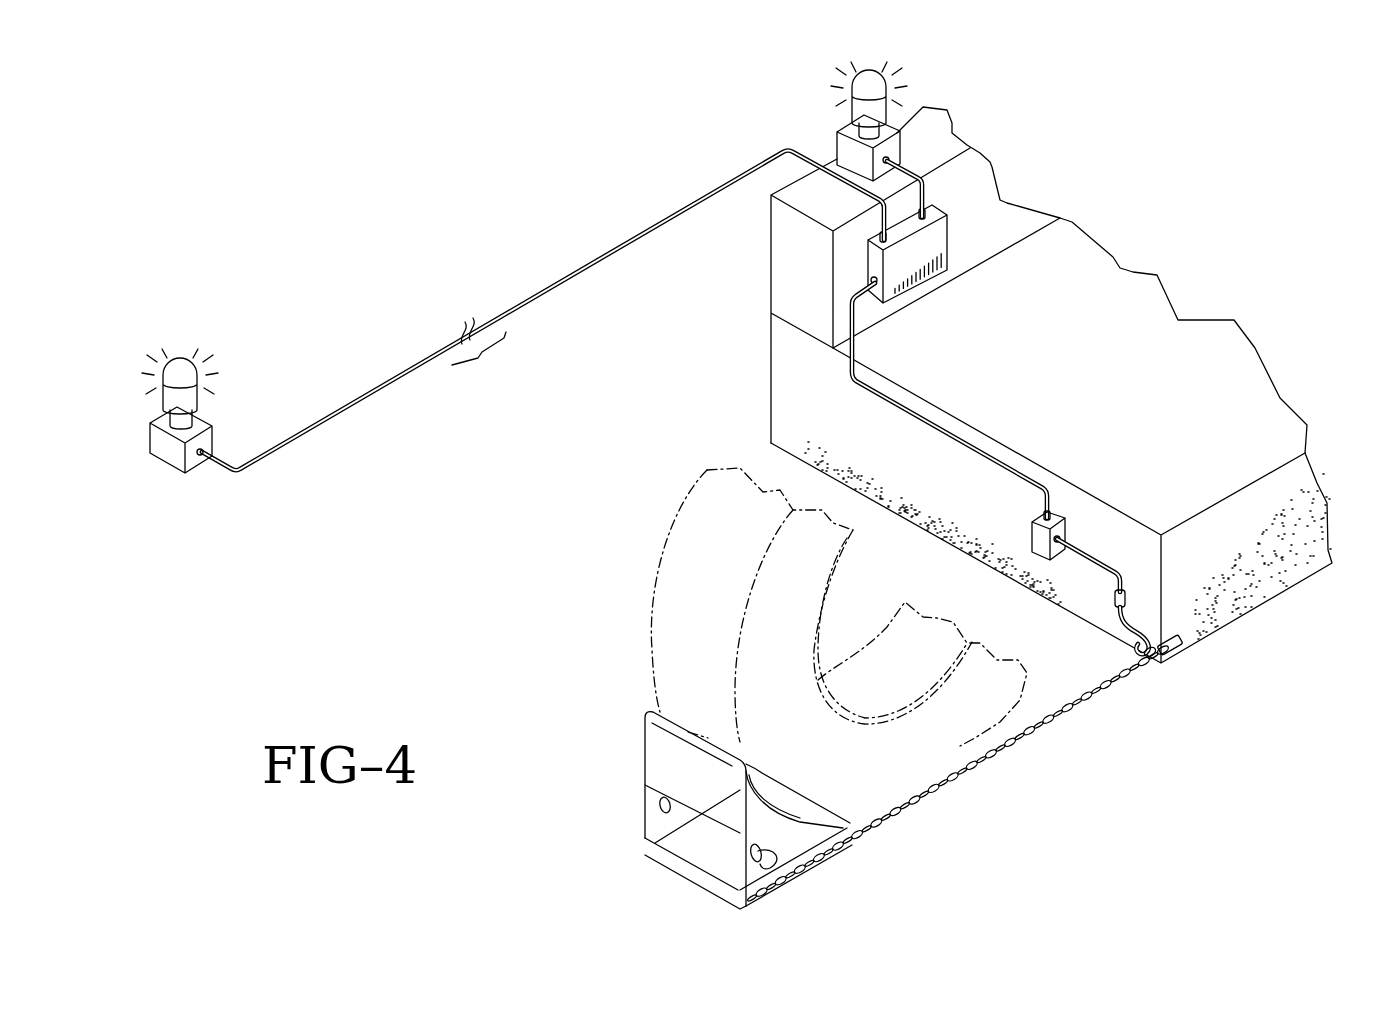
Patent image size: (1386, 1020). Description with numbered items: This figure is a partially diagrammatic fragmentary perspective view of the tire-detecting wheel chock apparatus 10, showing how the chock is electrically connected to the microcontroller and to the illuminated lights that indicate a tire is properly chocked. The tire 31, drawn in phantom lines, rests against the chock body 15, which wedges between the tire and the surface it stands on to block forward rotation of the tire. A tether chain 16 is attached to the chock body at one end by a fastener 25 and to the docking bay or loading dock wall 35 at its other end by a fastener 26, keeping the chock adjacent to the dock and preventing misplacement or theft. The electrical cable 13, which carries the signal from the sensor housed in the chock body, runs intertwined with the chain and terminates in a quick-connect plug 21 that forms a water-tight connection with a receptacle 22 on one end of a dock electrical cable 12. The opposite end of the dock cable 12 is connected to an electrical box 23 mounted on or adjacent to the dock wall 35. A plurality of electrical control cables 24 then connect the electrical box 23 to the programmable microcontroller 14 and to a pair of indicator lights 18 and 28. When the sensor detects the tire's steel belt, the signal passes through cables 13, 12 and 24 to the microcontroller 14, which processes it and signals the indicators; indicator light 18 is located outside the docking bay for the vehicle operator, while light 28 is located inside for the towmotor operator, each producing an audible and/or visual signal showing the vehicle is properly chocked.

The tire-detecting wheel chock apparatus 10 is at (600, 700).
The dock electrical cable 12 is at (1098, 560).
The electrical cable 13 is at (1137, 623).
The programmable microcontroller 14 is at (931, 288).
The chock body 15 is at (642, 768).
The tether chain 16 is at (948, 777).
The indicator light 18 is at (172, 455).
The quick-connect plug 21 is at (1110, 600).
The receptacle 22 is at (1128, 593).
The electrical box 23 is at (1060, 517).
The electrical control cables 24 is at (913, 172).
The fastener 25 is at (755, 897).
The fastener 26 is at (1180, 647).
The indicator light 28 is at (843, 128).
The tire 31 is at (736, 569).
The loading dock wall 35 is at (804, 397).